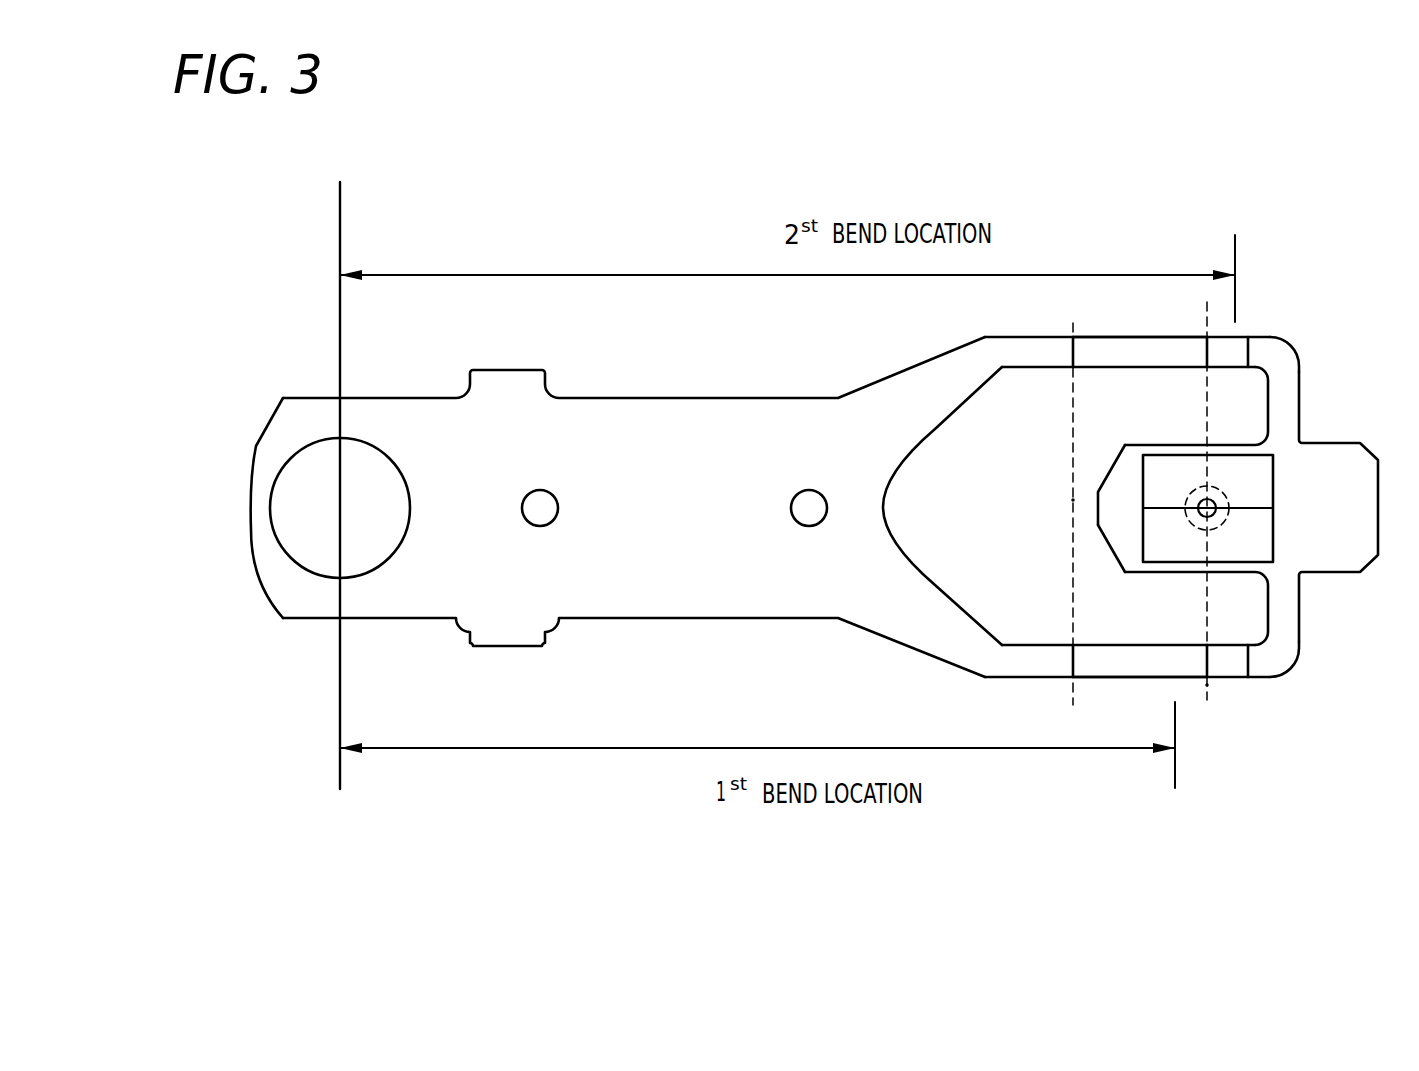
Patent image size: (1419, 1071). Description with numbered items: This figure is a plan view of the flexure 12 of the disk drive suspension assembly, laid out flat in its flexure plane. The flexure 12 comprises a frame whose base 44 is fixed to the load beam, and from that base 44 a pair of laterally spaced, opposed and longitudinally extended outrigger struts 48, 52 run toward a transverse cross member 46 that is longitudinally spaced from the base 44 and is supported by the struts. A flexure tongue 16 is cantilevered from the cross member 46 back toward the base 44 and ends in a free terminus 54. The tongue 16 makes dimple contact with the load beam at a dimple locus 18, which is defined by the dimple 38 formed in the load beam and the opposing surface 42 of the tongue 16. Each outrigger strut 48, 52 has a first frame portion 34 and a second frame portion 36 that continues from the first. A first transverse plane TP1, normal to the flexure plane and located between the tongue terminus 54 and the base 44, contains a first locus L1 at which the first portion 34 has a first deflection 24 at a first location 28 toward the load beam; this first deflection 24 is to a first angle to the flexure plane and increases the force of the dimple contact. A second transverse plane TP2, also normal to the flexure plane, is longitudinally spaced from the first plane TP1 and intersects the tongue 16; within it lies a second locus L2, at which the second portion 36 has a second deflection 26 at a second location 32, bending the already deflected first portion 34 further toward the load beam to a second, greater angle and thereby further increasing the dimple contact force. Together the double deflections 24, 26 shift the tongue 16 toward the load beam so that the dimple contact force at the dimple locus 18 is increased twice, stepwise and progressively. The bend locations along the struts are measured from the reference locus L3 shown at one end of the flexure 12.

The flexure 12 is at (824, 370).
The flexure tongue 16 is at (1118, 457).
The dimple locus 18 is at (1214, 502).
The first deflection 24 is at (1082, 337).
The second deflection 26 is at (1235, 337).
The first location 28 is at (1083, 378).
The second location 32 is at (1257, 332).
The first frame portion 34 is at (1072, 322).
The second frame portion 36 is at (1232, 368).
The dimple 38 is at (1226, 525).
The opposing surface 42 is at (1228, 517).
The base 44 is at (870, 583).
The transverse cross member 46 is at (1300, 388).
The outrigger strut 48 is at (1137, 678).
The outrigger strut 52 is at (1161, 337).
The free terminus 54 is at (1108, 510).
The first locus L1 is at (1076, 356).
The second locus L2 is at (1207, 320).
The reference locus L3 is at (340, 487).
The first transverse plane TP1 is at (1073, 500).
The second transverse plane TP2 is at (1207, 686).